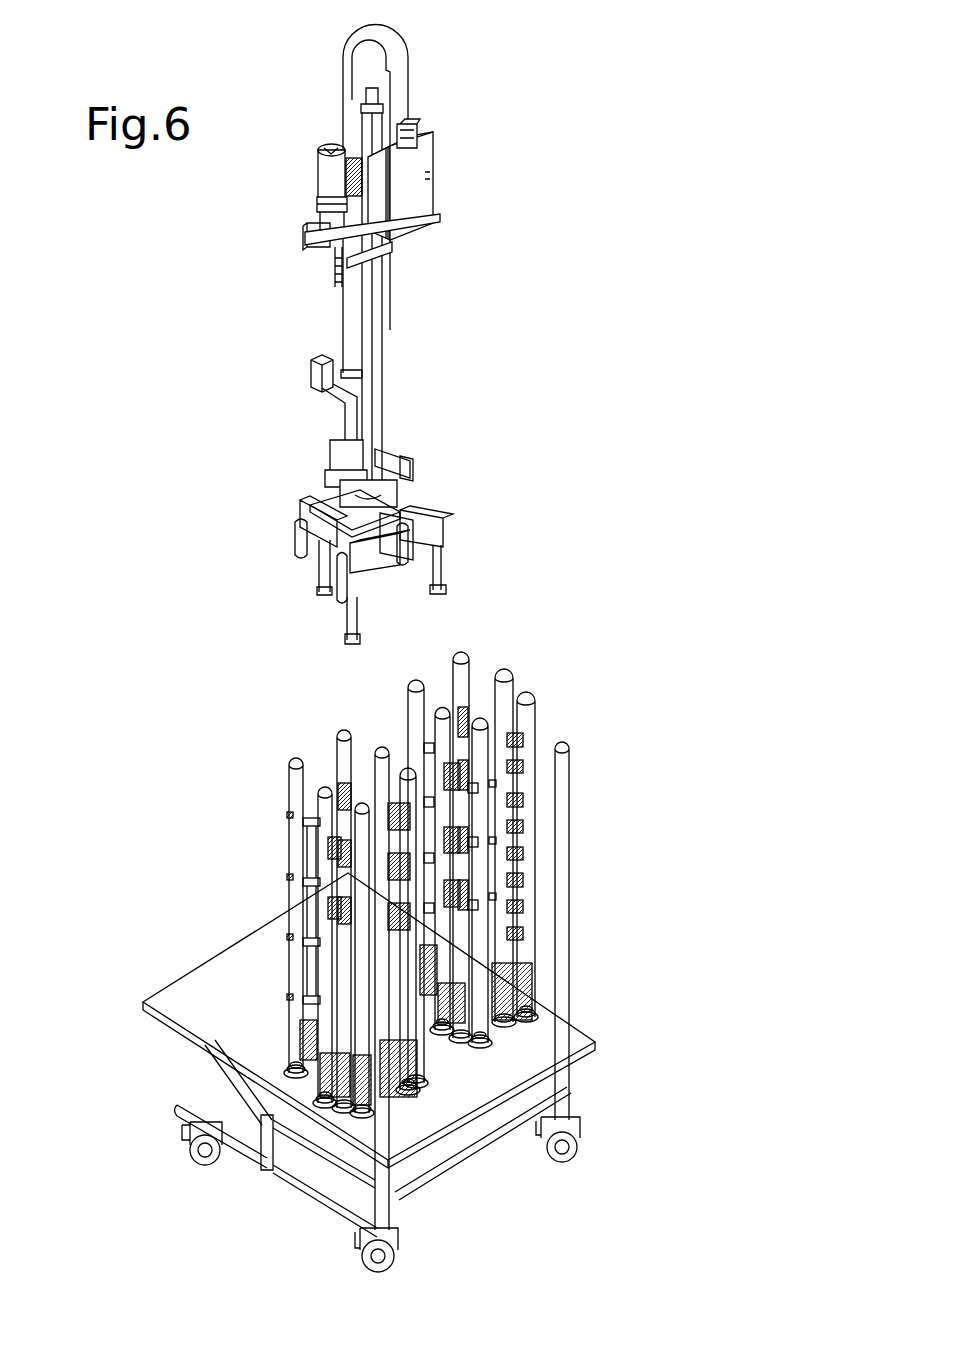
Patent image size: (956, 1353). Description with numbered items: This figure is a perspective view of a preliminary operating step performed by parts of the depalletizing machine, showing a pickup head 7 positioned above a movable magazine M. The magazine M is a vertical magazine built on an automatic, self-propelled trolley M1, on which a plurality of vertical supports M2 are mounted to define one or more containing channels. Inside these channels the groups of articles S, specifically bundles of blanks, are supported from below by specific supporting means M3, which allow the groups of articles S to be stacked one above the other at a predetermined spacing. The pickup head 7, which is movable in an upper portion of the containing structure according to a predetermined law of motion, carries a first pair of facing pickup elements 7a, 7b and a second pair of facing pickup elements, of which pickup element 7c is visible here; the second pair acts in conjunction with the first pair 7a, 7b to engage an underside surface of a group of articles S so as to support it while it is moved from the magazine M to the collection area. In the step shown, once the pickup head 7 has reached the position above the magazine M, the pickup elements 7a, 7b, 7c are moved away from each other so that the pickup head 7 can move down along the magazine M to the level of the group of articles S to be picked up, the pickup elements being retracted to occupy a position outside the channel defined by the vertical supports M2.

The pickup head 7 is at (433, 482).
The pickup element 7a is at (345, 615).
The pickup element 7b is at (446, 560).
The pickup element 7c is at (317, 572).
The movable magazine M is at (184, 951).
The automatic, self-propelled trolley M1 is at (178, 1035).
The vertical supports M2 is at (289, 784).
The supporting means M3 is at (311, 820).
The groups of articles S is at (515, 1000).